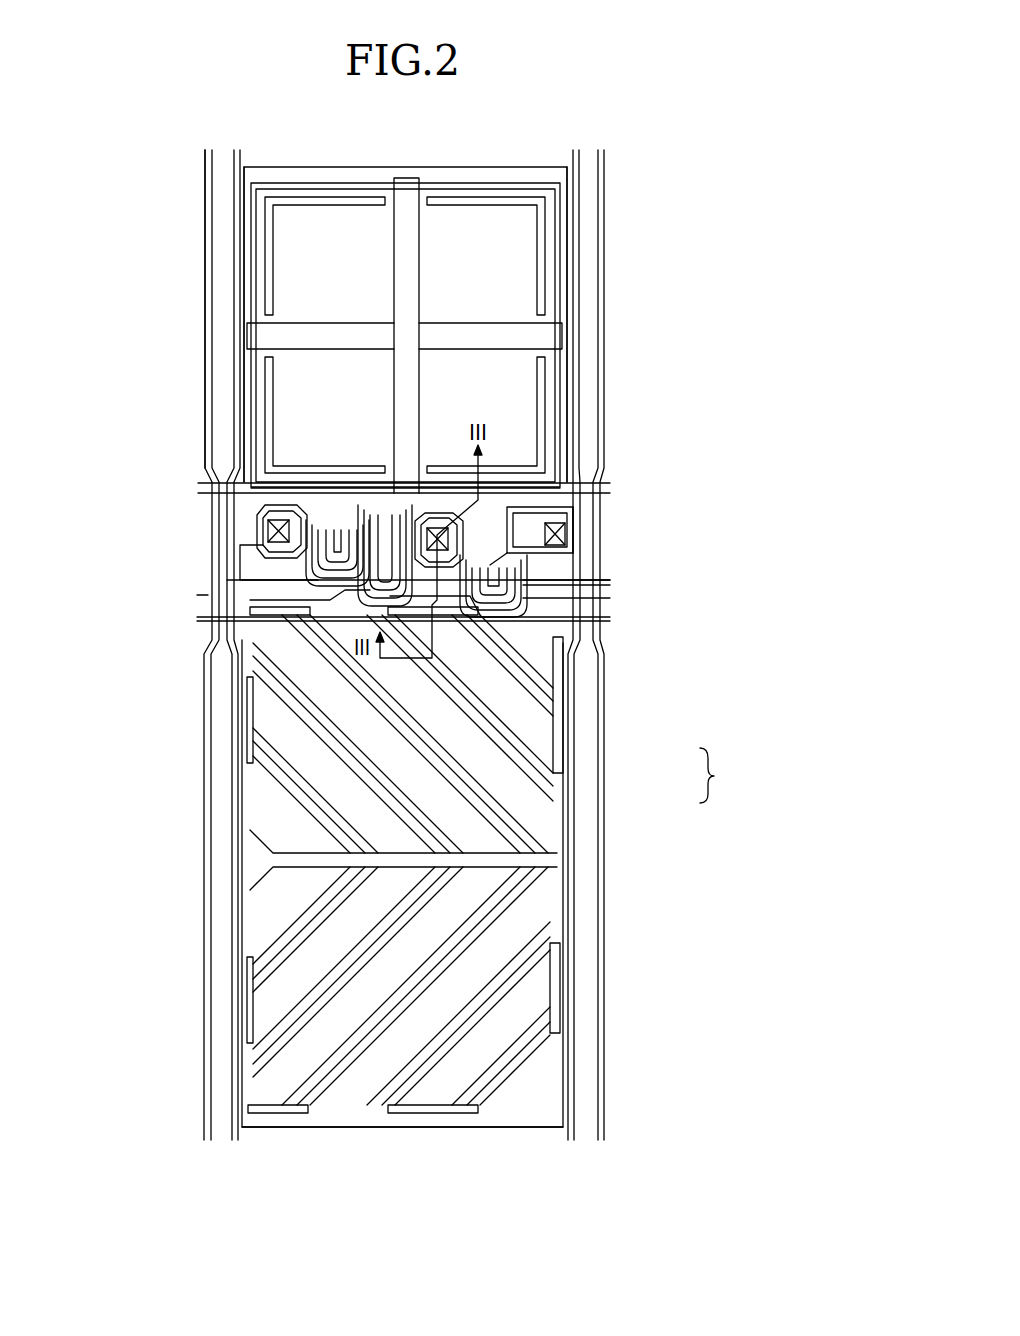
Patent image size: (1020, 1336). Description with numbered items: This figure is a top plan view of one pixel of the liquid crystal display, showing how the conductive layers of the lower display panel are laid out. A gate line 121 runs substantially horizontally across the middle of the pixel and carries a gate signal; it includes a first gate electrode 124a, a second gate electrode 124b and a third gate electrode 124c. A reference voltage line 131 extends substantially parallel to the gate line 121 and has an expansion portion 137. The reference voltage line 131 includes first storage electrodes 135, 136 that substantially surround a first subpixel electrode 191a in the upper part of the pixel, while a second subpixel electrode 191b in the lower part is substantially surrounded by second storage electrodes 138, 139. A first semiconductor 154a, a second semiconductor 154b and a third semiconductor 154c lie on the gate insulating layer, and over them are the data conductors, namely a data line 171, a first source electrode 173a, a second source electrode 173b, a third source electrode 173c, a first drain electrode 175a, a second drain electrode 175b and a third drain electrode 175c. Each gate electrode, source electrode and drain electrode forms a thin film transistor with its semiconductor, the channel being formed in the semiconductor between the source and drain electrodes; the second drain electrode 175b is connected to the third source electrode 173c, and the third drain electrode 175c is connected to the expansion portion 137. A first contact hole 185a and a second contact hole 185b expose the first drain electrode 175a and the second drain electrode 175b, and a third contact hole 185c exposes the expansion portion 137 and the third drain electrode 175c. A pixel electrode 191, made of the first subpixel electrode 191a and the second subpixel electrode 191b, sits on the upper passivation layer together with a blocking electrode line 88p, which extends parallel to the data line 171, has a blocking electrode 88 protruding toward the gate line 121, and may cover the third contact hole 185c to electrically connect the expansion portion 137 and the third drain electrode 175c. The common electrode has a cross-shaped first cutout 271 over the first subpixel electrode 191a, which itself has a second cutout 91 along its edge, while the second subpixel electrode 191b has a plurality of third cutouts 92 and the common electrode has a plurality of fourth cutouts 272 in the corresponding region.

The blocking electrode 88 is at (238, 608).
The blocking electrode line 88p is at (206, 252).
The second cutout 91 is at (507, 192).
The third cutouts 92 is at (345, 960).
The gate line 121 is at (245, 590).
The first gate electrode 124a is at (335, 548).
The second gate electrode 124b is at (392, 510).
The third gate electrode 124c is at (505, 575).
The reference voltage line 131 is at (600, 484).
The first storage electrode 135 is at (570, 390).
The first storage electrode 136 is at (360, 167).
The expansion portion 137 is at (578, 516).
The second storage electrode 138 is at (567, 905).
The second storage electrode 139 is at (503, 1128).
The first semiconductor 154a is at (350, 530).
The second semiconductor 154b is at (372, 520).
The third semiconductor 154c is at (490, 595).
The data line 171 is at (240, 193).
The first source electrode 173a is at (330, 557).
The second source electrode 173b is at (378, 602).
The third source electrode 173c is at (517, 568).
The first drain electrode 175a is at (262, 522).
The second drain electrode 175b is at (322, 578).
The third drain electrode 175c is at (525, 600).
The first contact hole 185a is at (266, 532).
The second contact hole 185b is at (460, 522).
The third contact hole 185c is at (568, 533).
The pixel electrode 191 is at (728, 775).
The first subpixel electrode 191a is at (250, 300).
The second subpixel electrode 191b is at (250, 790).
The first cutout 271 is at (515, 323).
The fourth cutouts 272 is at (318, 890).